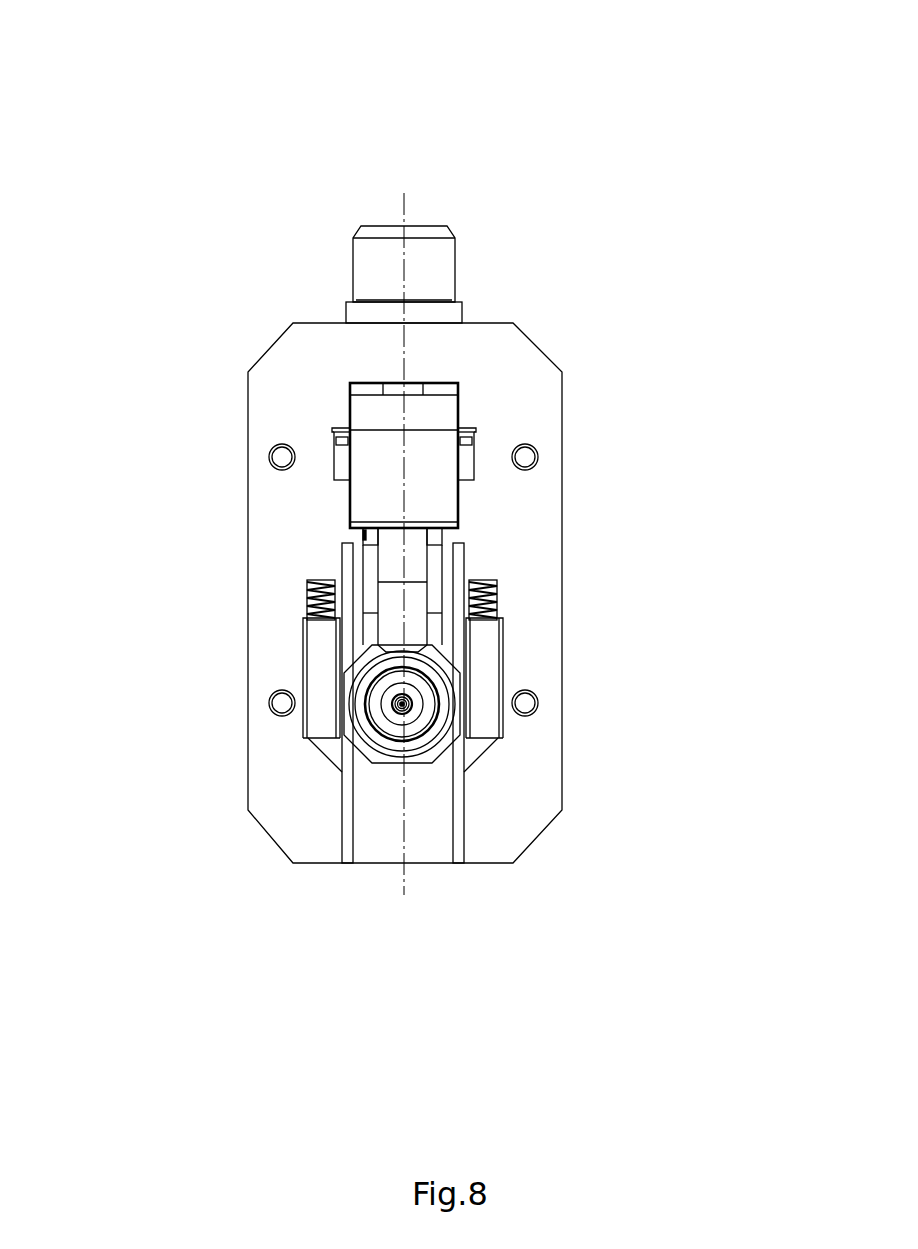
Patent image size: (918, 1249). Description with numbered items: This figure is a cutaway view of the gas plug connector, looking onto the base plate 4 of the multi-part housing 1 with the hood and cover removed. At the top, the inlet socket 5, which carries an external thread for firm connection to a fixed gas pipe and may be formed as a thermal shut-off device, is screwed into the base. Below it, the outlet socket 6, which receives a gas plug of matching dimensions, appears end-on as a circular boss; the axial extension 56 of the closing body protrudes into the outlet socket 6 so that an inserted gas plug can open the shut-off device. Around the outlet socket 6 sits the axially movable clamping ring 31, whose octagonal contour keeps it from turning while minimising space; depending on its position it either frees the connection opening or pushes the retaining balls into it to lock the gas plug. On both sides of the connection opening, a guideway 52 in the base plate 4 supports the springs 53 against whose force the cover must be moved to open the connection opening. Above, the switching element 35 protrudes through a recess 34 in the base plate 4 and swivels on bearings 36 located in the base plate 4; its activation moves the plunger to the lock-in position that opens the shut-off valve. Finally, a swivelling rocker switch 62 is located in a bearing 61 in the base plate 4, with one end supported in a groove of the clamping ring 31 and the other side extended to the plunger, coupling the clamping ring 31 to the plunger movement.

The housing 1 is at (565, 343).
The base plate 4 is at (278, 411).
The inlet socket 5 is at (427, 257).
The outlet socket 6 is at (370, 735).
The clamping ring 31 is at (352, 725).
The recess 34 is at (440, 389).
The switching element 35 is at (374, 412).
The bearings 36 is at (461, 440).
The guideway 52 is at (482, 672).
The springs 53 is at (497, 603).
The axial extension 56 is at (413, 707).
The bearing 61 is at (370, 551).
The rocker switch 62 is at (389, 563).